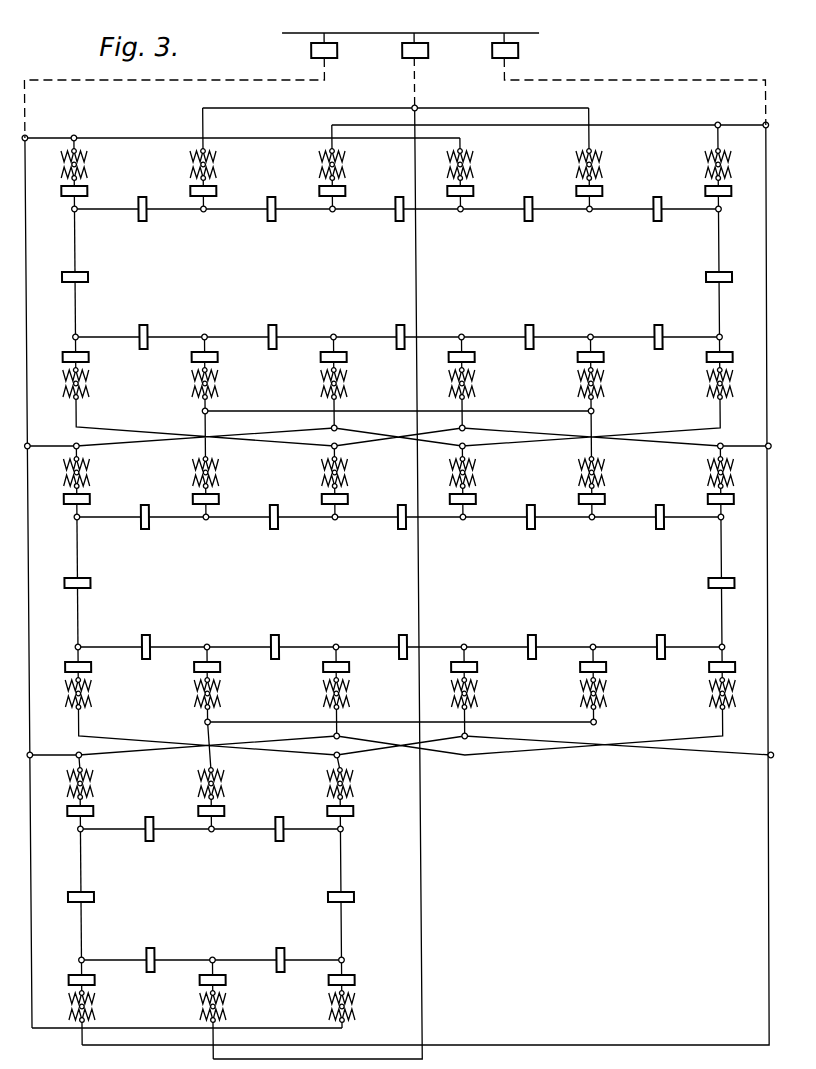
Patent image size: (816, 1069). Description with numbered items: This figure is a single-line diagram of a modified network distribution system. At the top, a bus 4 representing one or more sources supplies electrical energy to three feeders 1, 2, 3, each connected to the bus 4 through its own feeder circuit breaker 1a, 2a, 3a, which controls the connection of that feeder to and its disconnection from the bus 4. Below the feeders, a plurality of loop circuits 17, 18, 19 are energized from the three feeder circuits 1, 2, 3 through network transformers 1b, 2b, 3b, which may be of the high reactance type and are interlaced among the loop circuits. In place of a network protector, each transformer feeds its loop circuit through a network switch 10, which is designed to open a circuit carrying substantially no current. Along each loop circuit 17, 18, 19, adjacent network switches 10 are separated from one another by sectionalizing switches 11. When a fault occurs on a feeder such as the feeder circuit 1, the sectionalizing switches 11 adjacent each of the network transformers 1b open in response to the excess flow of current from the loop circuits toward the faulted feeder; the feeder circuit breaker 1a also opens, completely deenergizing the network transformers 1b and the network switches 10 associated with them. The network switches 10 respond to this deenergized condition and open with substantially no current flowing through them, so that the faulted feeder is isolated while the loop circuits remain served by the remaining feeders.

The bus 4 is at (540, 33).
The feeder circuit breaker 1a is at (312, 51).
The feeder circuit breaker 2a is at (403, 51).
The feeder circuit breaker 3a is at (493, 51).
The feeder 1 is at (233, 78).
The feeder 2 is at (413, 85).
The feeder 3 is at (575, 78).
The network transformer 1b is at (114, 172).
The network transformer 2b is at (243, 172).
The network transformer 3b is at (372, 172).
The network switch 10 is at (87, 192).
The sectionalizing switch 11 is at (157, 192).
The loop circuit 17 is at (77, 244).
The loop circuit 18 is at (77, 552).
The loop circuit 19 is at (77, 862).